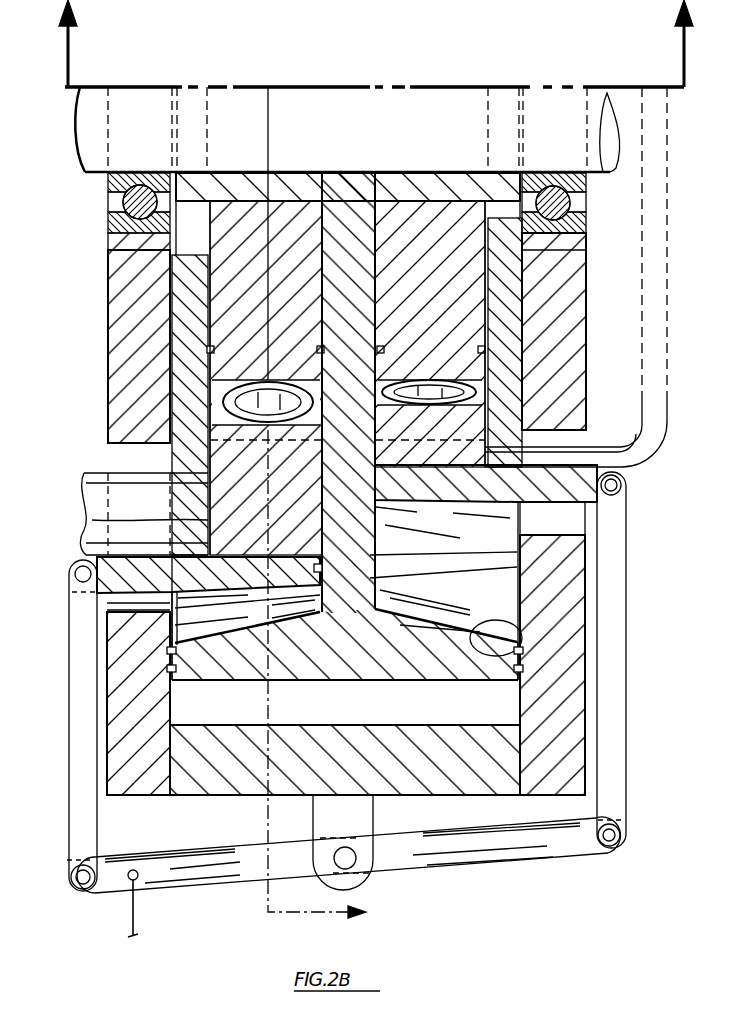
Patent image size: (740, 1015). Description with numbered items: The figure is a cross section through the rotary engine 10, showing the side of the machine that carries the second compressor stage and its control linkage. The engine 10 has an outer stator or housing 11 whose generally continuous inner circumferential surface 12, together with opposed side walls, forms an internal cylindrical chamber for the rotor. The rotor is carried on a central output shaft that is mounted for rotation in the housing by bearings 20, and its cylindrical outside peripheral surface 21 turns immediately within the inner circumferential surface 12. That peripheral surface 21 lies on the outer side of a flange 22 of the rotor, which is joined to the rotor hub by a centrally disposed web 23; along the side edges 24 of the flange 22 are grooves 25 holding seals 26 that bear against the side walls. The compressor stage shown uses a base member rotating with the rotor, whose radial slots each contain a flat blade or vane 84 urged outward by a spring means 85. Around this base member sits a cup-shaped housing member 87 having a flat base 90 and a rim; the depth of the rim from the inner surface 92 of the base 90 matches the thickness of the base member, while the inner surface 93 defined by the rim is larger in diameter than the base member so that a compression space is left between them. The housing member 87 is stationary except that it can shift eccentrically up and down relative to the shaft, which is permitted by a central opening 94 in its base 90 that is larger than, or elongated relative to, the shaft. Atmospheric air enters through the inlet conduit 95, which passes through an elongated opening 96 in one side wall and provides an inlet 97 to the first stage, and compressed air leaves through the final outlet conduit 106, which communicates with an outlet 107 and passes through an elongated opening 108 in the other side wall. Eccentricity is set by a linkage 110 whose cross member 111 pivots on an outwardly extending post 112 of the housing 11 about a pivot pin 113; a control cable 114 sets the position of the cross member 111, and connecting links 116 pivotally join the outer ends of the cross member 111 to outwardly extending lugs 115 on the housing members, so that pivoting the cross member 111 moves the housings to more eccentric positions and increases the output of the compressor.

The rotary engine 10 is at (96, 277).
The housing 11 is at (216, 791).
The inner circumferential surface 12 is at (545, 712).
The bearings 20 is at (586, 228).
The outside peripheral surface 21 is at (107, 740).
The flange 22 is at (172, 626).
The web 23 is at (470, 594).
The side edges 24 is at (152, 690).
The grooves 25 is at (520, 625).
The seals 26 is at (166, 658).
The vane 84 is at (222, 457).
The spring means 85 is at (222, 405).
The housing member 87 is at (513, 310).
The base 90 is at (178, 321).
The inner surface 92 is at (206, 336).
The inner surface 93 is at (107, 604).
The central opening 94 is at (183, 241).
The inlet conduit 95 is at (80, 538).
The elongated opening 96 is at (115, 473).
The inlet 97 is at (92, 522).
The outlet conduit 106 is at (592, 442).
The outlet 107 is at (440, 555).
The elongated opening 108 is at (577, 515).
The linkage 110 is at (503, 874).
The cross member 111 is at (241, 880).
The post 112 is at (378, 812).
The pivot pin 113 is at (362, 880).
The control cable 114 is at (136, 906).
The lugs 115 is at (585, 492).
The connecting links 116 is at (97, 829).